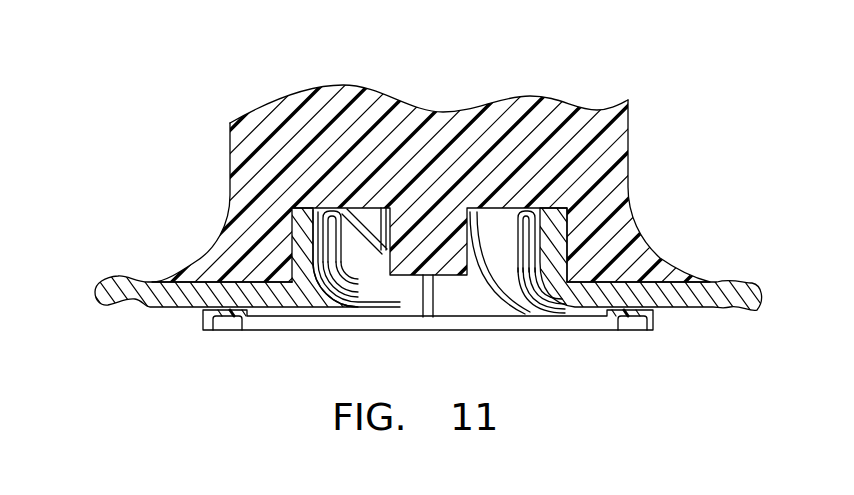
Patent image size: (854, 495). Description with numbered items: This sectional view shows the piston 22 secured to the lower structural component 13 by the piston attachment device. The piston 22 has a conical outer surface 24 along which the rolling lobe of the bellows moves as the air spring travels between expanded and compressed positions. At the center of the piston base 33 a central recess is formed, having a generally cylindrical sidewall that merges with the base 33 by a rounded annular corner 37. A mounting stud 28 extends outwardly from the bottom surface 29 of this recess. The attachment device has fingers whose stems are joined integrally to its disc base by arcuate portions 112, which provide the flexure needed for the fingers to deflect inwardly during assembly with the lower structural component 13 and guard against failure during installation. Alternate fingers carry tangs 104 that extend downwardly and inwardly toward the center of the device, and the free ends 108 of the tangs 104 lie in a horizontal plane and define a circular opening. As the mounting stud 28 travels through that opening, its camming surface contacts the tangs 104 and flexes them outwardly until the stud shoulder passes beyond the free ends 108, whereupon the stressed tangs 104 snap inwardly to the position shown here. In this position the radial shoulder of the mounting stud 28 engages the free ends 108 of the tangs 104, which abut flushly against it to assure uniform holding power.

The lower structural component 13 is at (102, 307).
The piston 22 is at (293, 92).
The conical outer surface 24 is at (632, 140).
The mounting stud 28 is at (397, 280).
The bottom surface 29 is at (390, 166).
The base 33 is at (675, 290).
The rounded annular corner 37 is at (574, 295).
The tangs 104 is at (520, 300).
The free ends 108 is at (490, 222).
The arcuate portions 112 is at (293, 303).